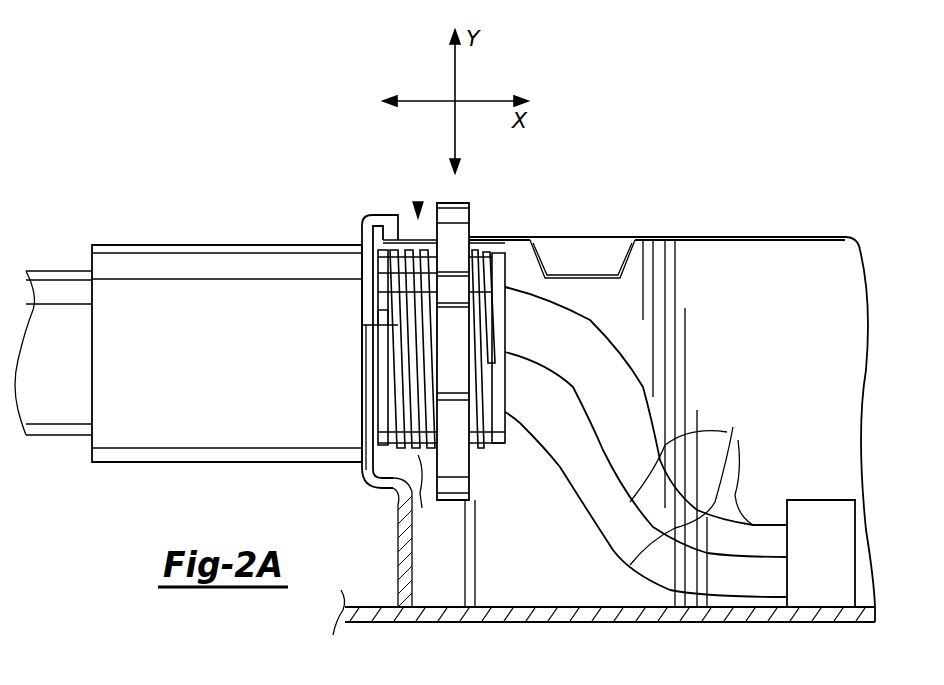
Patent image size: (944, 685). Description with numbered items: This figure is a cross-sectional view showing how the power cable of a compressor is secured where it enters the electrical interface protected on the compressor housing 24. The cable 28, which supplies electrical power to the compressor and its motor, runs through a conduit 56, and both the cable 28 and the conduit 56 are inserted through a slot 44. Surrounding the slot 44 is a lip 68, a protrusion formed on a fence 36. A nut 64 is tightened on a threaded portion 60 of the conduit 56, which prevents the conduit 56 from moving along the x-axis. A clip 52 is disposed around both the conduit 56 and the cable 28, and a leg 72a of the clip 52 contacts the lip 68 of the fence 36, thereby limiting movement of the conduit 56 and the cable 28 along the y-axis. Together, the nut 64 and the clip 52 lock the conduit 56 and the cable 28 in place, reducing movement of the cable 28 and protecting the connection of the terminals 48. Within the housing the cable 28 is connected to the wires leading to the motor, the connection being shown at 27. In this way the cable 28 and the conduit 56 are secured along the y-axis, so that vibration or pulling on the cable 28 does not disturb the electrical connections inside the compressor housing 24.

The compressor housing 24 is at (543, 607).
The connection of cable to wires 27 is at (691, 486).
The cable 28 is at (66, 373).
The fence 36 is at (762, 237).
The slot 44 is at (418, 206).
The terminals 48 is at (829, 550).
The clip 52 is at (397, 215).
The conduit 56 is at (247, 341).
The threaded portion 60 is at (383, 413).
The nut 64 is at (469, 213).
The lip 68 is at (410, 490).
The leg 72a is at (373, 477).